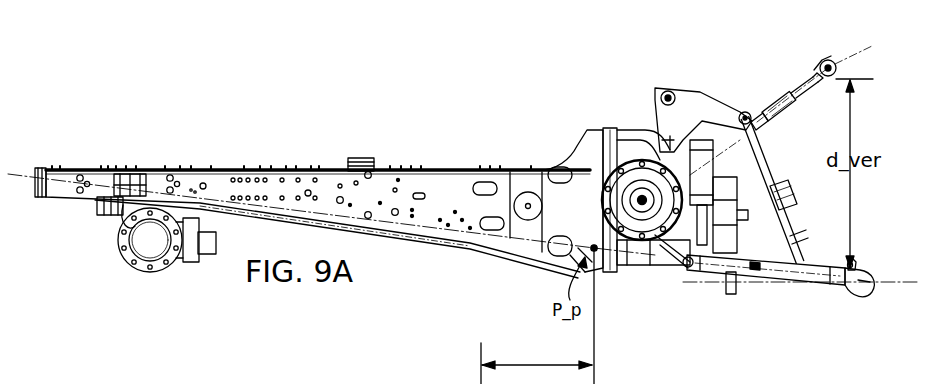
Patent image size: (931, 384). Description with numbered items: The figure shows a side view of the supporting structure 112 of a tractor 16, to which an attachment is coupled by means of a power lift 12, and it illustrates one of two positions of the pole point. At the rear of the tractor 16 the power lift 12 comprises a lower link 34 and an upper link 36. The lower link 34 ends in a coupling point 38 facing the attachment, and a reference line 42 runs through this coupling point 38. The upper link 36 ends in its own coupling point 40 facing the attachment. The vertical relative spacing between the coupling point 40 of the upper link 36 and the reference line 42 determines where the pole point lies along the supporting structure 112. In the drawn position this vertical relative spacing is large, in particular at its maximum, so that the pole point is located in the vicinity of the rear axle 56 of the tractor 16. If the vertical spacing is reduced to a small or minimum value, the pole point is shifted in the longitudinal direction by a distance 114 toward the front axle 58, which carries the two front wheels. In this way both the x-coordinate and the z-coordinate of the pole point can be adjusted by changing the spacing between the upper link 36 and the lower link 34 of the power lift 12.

The power lift 12 is at (840, 50).
The tractor 16 is at (540, 104).
The lower link 34 is at (768, 270).
The upper link 36 is at (747, 113).
The coupling point 38 is at (862, 298).
The coupling point of the upper link 40 is at (824, 61).
The reference line 42 is at (690, 283).
The rear axle 56 is at (645, 160).
The front axle 58 is at (149, 245).
The supporting structure 112 is at (265, 168).
The distance 114 is at (528, 364).